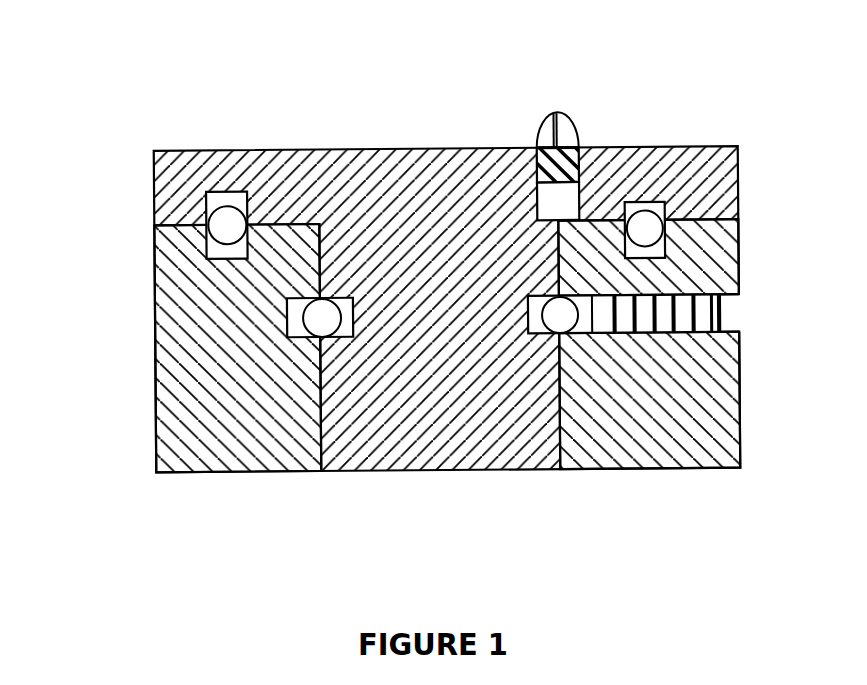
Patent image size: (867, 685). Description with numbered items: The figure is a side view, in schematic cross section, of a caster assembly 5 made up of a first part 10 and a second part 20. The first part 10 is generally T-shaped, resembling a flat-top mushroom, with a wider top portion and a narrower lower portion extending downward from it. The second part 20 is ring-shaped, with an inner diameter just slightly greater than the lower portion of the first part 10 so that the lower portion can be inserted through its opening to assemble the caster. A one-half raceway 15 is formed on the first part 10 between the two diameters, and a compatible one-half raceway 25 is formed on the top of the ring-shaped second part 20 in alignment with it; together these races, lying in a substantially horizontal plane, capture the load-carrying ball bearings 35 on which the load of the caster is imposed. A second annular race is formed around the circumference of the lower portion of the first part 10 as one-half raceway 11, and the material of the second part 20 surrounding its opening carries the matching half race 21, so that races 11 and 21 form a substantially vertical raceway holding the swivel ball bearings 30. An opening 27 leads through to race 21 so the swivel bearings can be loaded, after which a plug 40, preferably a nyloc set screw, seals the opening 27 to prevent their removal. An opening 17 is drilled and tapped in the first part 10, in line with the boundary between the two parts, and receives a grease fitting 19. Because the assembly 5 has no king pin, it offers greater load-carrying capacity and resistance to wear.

The caster assembly 5 is at (422, 301).
The first part 10 is at (286, 146).
The one-half raceway 11 is at (287, 303).
The one-half raceway 15 is at (290, 134).
The opening 17 is at (590, 148).
The grease fitting 19 is at (545, 123).
The second part 20 is at (640, 458).
The race 21 is at (300, 425).
The one-half raceway 25 is at (658, 250).
The opening 27 is at (740, 320).
The ball bearings 30 is at (303, 321).
The ball bearings 35 is at (237, 218).
The plug 40 is at (680, 323).